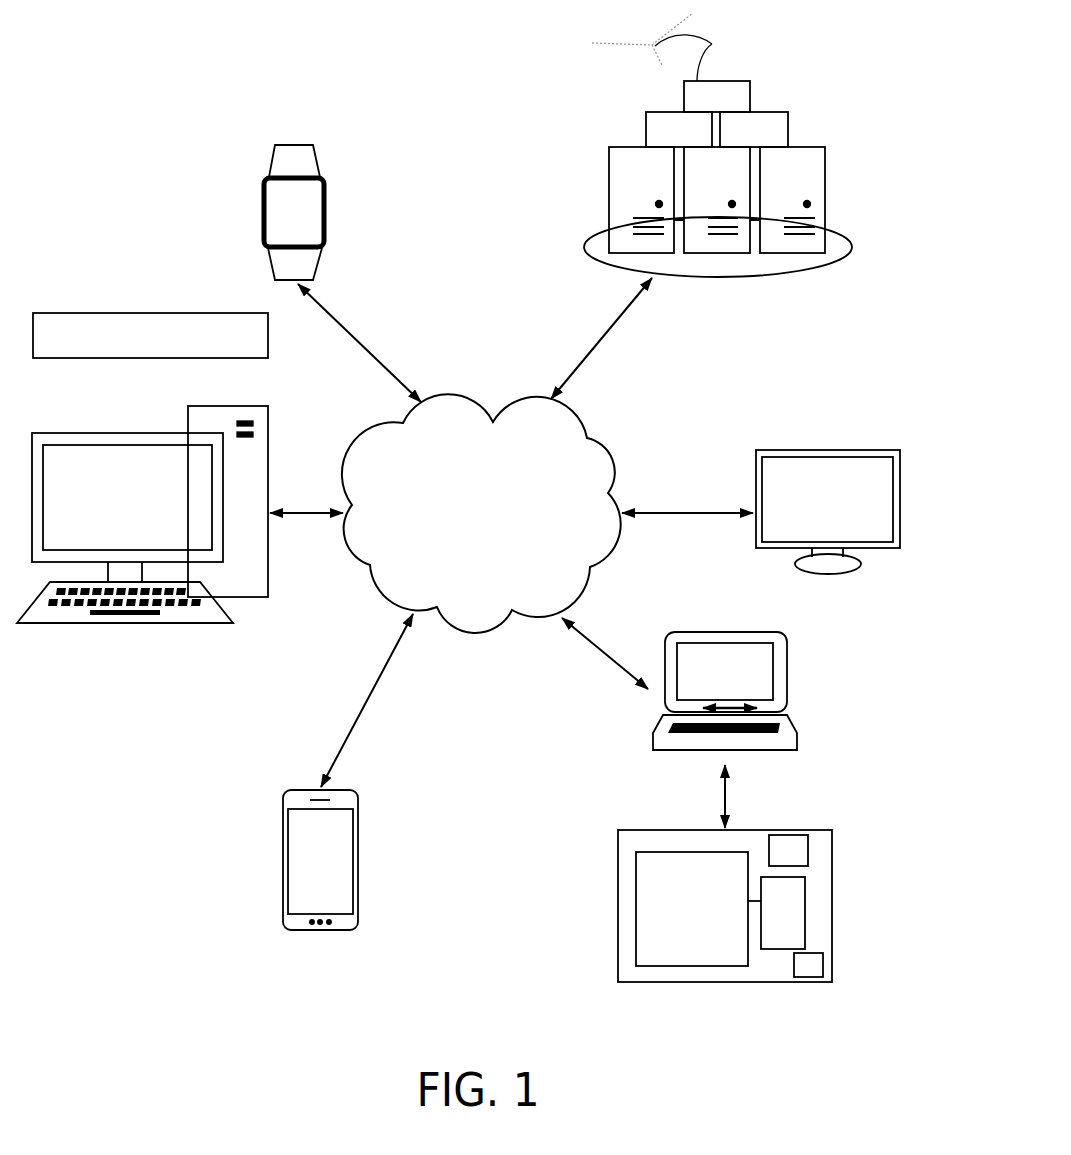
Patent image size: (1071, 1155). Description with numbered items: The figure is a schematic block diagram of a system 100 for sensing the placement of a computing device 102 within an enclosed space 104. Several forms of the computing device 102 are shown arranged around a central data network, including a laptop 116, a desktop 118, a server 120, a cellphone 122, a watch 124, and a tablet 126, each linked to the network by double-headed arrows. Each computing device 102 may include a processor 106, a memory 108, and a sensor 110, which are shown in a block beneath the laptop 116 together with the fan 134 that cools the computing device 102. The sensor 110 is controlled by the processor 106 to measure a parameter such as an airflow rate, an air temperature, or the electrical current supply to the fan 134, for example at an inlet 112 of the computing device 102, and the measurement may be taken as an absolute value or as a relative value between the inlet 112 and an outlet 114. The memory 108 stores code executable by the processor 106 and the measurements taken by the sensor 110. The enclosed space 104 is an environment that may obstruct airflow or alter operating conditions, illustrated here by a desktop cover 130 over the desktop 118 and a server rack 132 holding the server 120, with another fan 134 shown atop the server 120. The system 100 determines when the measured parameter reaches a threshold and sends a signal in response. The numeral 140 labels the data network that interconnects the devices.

The system 100 is at (118, 66).
The computing device 102 is at (476, 495).
The enclosed space 104 is at (842, 242).
The processor 106 is at (688, 849).
The memory 108 is at (783, 952).
The sensor 110 is at (656, 205).
The inlet 112 is at (646, 720).
The outlet 114 is at (806, 718).
The laptop 116 is at (688, 688).
The desktop 118 is at (232, 425).
The server 120 is at (817, 152).
The cellphone 122 is at (320, 860).
The watch 124 is at (264, 243).
The tablet 126 is at (827, 438).
The desktop cover 130 is at (132, 348).
The server rack 132 is at (829, 206).
The fan 134 is at (652, 73).
The data network 140 is at (468, 537).